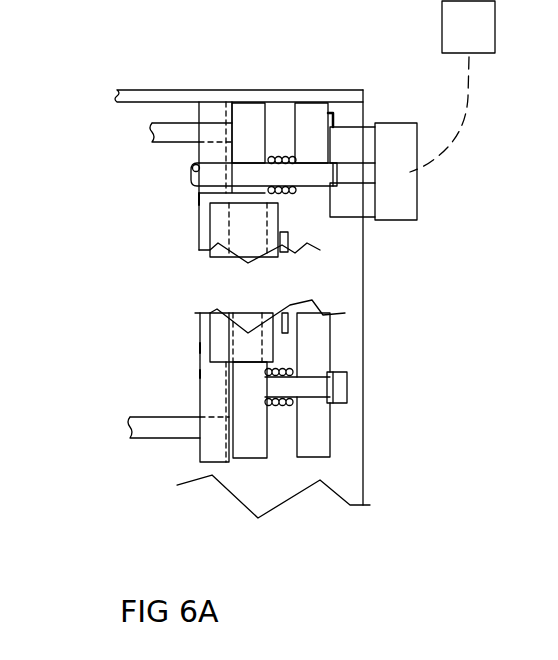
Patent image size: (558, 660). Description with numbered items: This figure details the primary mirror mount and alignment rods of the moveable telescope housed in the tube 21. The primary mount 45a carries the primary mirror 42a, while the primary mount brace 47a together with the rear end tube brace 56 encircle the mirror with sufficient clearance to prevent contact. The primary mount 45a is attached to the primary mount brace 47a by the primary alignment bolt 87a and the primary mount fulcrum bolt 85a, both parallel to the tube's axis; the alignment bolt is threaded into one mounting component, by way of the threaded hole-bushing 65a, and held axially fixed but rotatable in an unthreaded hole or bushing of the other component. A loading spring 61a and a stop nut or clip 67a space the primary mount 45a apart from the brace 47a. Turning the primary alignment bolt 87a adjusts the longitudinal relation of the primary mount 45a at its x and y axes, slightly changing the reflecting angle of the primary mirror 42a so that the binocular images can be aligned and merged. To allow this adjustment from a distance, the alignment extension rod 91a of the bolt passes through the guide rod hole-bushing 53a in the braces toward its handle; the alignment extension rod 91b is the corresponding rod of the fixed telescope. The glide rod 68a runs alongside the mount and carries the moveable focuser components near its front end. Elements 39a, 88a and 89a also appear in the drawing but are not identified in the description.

The tube 21 is at (363, 92).
The slide carriage 39a is at (248, 333).
The primary mirror 42a is at (199, 348).
The primary mount 45a is at (307, 105).
The primary mount brace 47a is at (262, 103).
The guide rod hole-bushing 53a is at (213, 122).
The rear end tube brace 56 is at (198, 373).
The loading spring 61a is at (287, 368).
The threaded hole-bushing 65a is at (329, 184).
The stop nut or clip 67a is at (232, 163).
The glide rod 68a is at (152, 123).
The primary mount fulcrum bolt 85a is at (313, 374).
The primary alignment bolt 87a is at (313, 163).
The drive motor 88a is at (418, 193).
The controller 89a is at (469, 55).
The alignment extension rod 91a is at (197, 178).
The alignment extension rod 91b is at (548, 648).